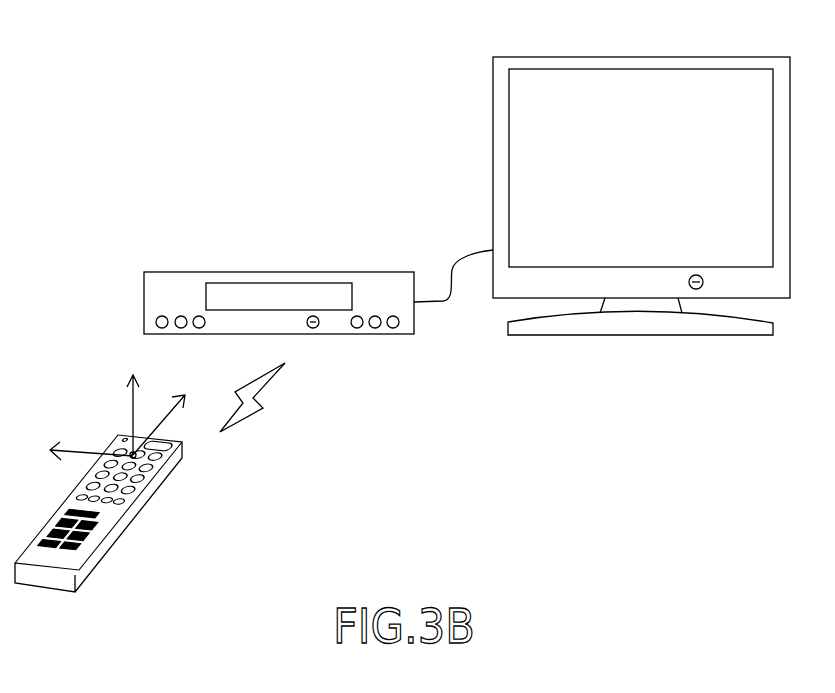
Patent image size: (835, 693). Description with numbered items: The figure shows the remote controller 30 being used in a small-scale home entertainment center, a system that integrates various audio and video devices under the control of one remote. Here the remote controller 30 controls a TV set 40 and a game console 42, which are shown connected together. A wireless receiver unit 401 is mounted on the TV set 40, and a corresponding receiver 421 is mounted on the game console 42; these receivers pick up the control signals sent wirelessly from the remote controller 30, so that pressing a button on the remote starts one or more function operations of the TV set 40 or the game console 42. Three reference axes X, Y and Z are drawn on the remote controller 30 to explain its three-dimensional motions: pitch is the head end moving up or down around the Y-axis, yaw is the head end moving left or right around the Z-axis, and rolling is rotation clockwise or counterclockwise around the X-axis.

The remote controller 30 is at (95, 423).
The TV set 40 is at (710, 58).
The wireless receiver unit 401 is at (703, 283).
The game console 42 is at (236, 272).
The host sensor 421 is at (319, 325).